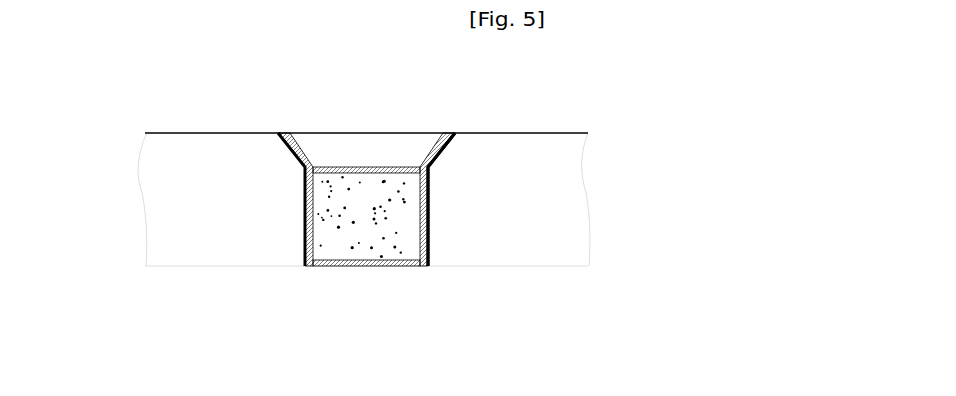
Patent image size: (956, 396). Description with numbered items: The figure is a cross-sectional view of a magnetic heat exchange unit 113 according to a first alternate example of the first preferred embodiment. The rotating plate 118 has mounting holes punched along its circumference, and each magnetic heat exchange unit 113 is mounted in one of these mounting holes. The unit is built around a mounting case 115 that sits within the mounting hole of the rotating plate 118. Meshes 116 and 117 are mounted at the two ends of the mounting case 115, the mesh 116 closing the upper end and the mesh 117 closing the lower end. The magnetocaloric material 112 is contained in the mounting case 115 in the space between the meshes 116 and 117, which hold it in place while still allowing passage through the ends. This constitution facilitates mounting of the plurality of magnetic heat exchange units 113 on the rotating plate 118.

The magnetocaloric material 112 is at (330, 222).
The magnetic heat exchange unit 113 is at (342, 138).
The mounting case 115 is at (432, 220).
The mesh 116 is at (402, 166).
The mesh 117 is at (372, 267).
The rotating plate 118 is at (170, 193).